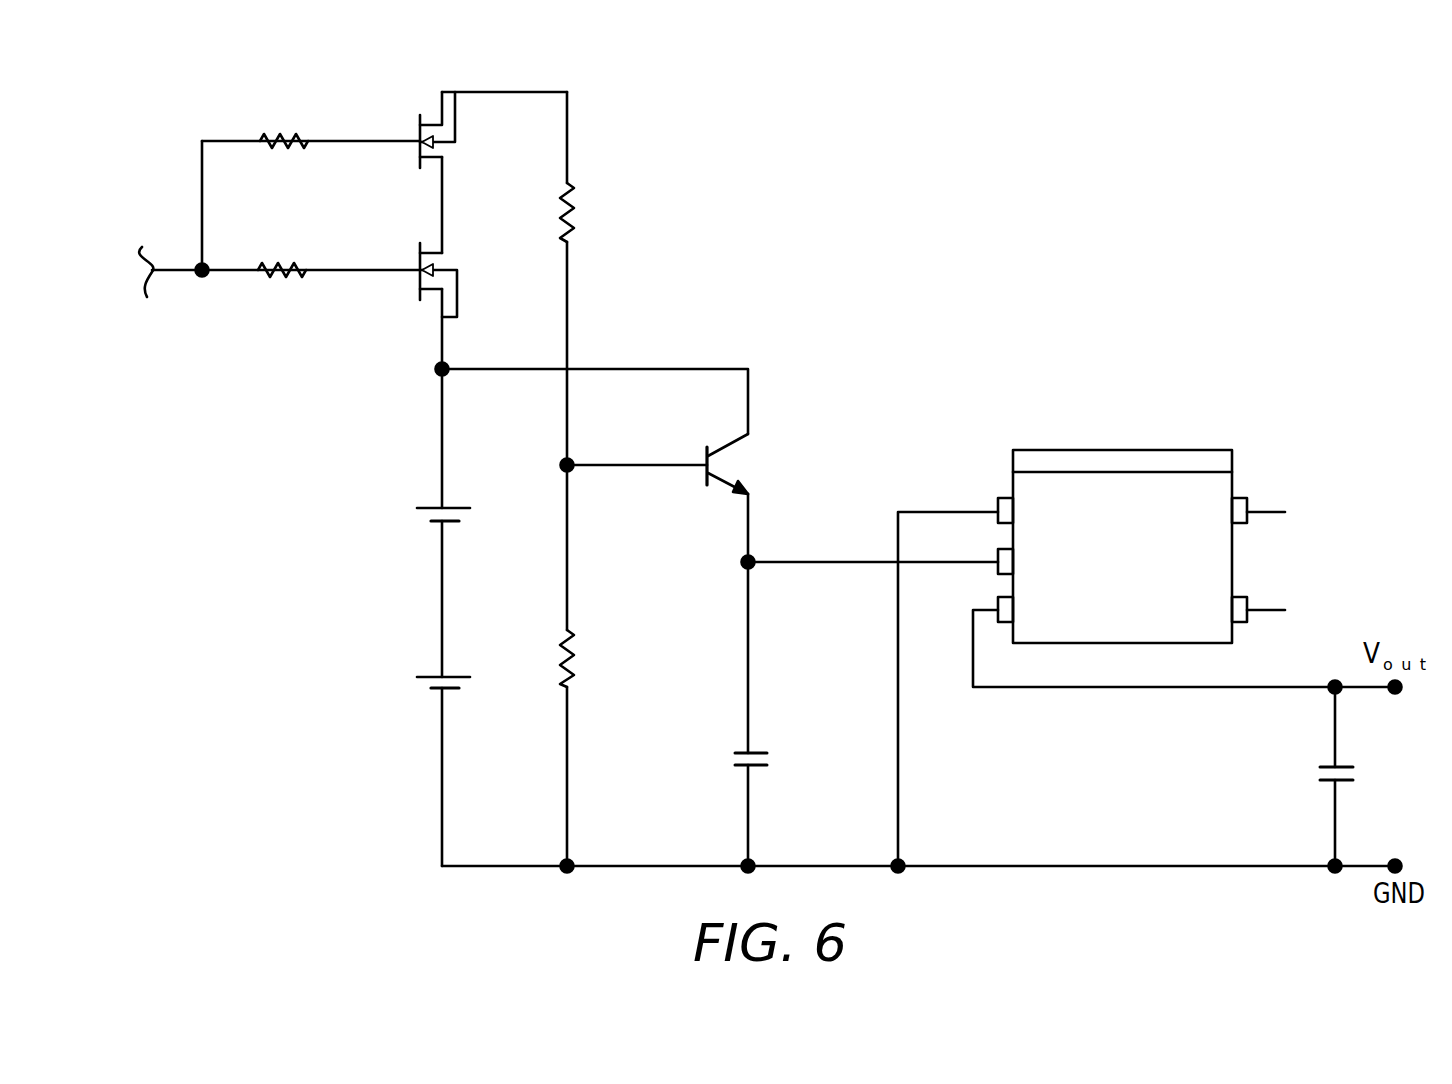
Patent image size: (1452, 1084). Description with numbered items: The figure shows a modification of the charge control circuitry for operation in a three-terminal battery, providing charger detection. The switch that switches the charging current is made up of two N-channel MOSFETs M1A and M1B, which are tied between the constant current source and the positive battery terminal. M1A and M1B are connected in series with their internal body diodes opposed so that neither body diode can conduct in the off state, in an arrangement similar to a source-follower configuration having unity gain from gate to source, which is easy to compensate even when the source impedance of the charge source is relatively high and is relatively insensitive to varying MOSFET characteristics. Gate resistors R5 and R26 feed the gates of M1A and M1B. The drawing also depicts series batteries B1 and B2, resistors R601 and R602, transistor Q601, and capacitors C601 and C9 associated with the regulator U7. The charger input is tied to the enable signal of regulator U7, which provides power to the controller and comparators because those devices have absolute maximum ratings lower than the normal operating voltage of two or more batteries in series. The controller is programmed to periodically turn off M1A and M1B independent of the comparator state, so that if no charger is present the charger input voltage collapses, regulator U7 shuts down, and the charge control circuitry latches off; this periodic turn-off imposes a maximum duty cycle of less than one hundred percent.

The resistor R5 10K R5 is at (285, 143).
The resistor R26 10K R26 is at (282, 272).
The N-channel MOSFET M1A is at (466, 130).
The N-channel MOSFET M1B is at (466, 280).
The resistor R601 100K R601 is at (605, 209).
The resistor R602 1M R602 is at (609, 658).
The transistor Q601 is at (764, 464).
The battery B1 is at (462, 520).
The battery B2 is at (462, 690).
The capacitor C601 1UF C601 is at (791, 763).
The capacitor C9 1UF C9 is at (1364, 770).
The regulator U7 is at (1161, 526).